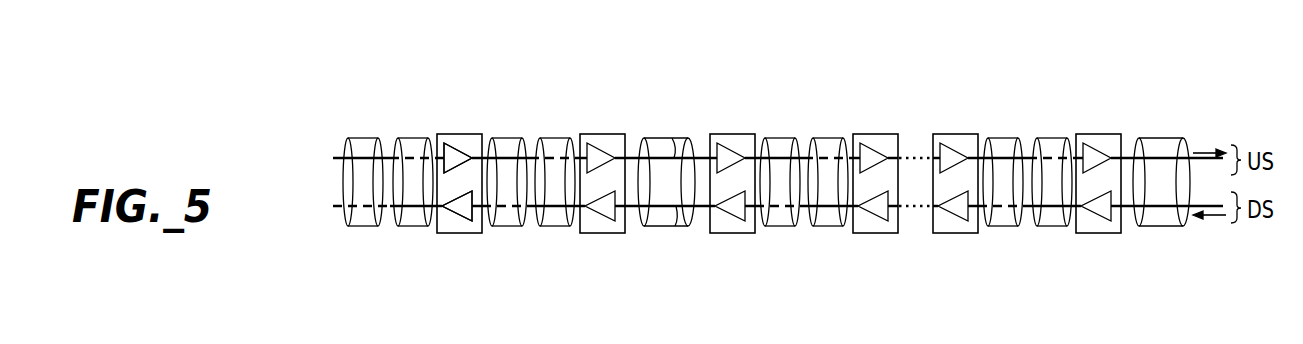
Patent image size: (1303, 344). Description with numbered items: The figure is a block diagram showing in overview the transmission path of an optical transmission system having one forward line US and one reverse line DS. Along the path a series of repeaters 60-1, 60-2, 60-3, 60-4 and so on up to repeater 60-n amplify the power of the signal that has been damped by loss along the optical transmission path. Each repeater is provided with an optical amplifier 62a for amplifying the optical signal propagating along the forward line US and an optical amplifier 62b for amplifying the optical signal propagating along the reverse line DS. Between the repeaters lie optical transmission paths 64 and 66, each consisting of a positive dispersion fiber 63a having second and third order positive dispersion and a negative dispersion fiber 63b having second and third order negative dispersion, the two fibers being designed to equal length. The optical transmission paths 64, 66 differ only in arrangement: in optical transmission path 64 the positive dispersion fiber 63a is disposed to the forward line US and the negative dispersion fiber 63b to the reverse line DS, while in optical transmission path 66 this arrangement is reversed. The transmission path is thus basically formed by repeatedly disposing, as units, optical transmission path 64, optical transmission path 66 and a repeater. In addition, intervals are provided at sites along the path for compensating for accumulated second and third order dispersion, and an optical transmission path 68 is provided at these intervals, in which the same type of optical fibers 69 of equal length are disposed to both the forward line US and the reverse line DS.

The repeater 60-1 is at (470, 134).
The repeater 60-2 is at (602, 134).
The repeater 60-3 is at (733, 134).
The repeater 60-4 is at (877, 134).
The repeater 60-n is at (1102, 134).
The optical amplifier 62a is at (451, 143).
The optical amplifier 62b is at (460, 221).
The positive dispersion fiber 63a is at (348, 160).
The negative dispersion fiber 63b is at (413, 152).
The optical transmission path 64 is at (361, 138).
The optical transmission path 66 is at (400, 227).
The optical transmission path 68 is at (648, 227).
The optical fiber 69 is at (672, 140).